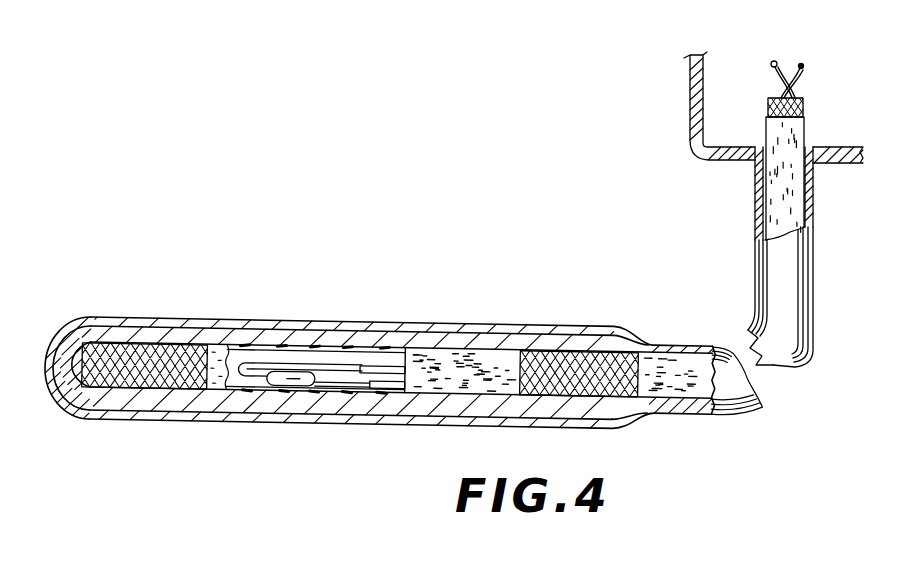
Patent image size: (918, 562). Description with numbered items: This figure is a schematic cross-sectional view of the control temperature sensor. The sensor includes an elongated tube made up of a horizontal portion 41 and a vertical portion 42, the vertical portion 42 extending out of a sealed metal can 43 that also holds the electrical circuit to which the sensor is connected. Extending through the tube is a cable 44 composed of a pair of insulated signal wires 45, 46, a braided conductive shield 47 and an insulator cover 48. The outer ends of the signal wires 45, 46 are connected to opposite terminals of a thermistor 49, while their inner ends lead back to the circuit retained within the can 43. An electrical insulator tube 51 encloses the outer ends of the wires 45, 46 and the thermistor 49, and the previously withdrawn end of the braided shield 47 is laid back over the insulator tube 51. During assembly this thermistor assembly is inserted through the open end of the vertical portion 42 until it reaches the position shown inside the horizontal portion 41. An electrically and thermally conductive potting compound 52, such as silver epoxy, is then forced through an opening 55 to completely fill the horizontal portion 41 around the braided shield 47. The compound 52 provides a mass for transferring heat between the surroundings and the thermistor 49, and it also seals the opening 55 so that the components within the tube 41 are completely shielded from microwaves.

The horizontal portion 41 is at (332, 320).
The vertical portion 42 is at (813, 195).
The sealed metal can 43 is at (705, 158).
The cable 44 is at (820, 141).
The signal wire 45 is at (337, 362).
The signal wire 46 is at (357, 382).
The braided conductive shield 47 is at (135, 387).
The insulator cover 48 is at (765, 122).
The thermistor 49 is at (282, 382).
The electrical insulator tube 51 is at (270, 345).
The potting compound 52 is at (200, 330).
The opening 55 is at (50, 372).